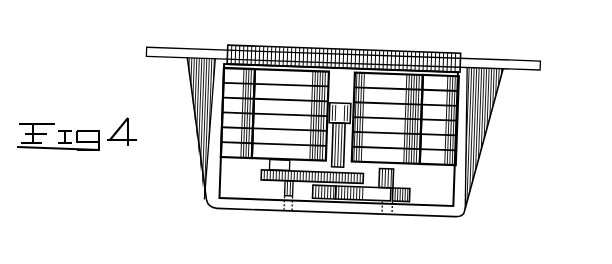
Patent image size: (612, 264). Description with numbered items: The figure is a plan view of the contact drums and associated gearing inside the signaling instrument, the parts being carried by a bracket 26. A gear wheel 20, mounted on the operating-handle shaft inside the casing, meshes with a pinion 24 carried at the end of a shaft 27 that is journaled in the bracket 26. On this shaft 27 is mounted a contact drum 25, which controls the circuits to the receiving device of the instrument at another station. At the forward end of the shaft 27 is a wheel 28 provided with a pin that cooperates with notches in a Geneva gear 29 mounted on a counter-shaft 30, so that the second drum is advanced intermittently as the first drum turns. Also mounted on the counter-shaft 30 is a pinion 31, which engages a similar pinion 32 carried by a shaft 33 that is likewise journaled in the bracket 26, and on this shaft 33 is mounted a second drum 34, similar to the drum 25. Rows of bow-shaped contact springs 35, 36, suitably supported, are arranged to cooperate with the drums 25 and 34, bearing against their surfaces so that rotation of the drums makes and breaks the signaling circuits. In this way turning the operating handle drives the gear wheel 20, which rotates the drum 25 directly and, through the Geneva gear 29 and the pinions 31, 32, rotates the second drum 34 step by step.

The gear wheel 20 is at (342, 51).
The pinion 24 is at (397, 52).
The contact drum 25 is at (411, 77).
The bracket 26 is at (473, 70).
The shaft 27 is at (397, 174).
The wheel 28 is at (410, 197).
The Geneva gear 29 is at (318, 197).
The counter-shaft 30 is at (351, 143).
The pinion 31 is at (358, 197).
The pinion 32 is at (265, 175).
The shaft 33 is at (287, 190).
The second drum 34 is at (283, 76).
The contact springs 35 is at (460, 119).
The contact springs 36 is at (228, 88).